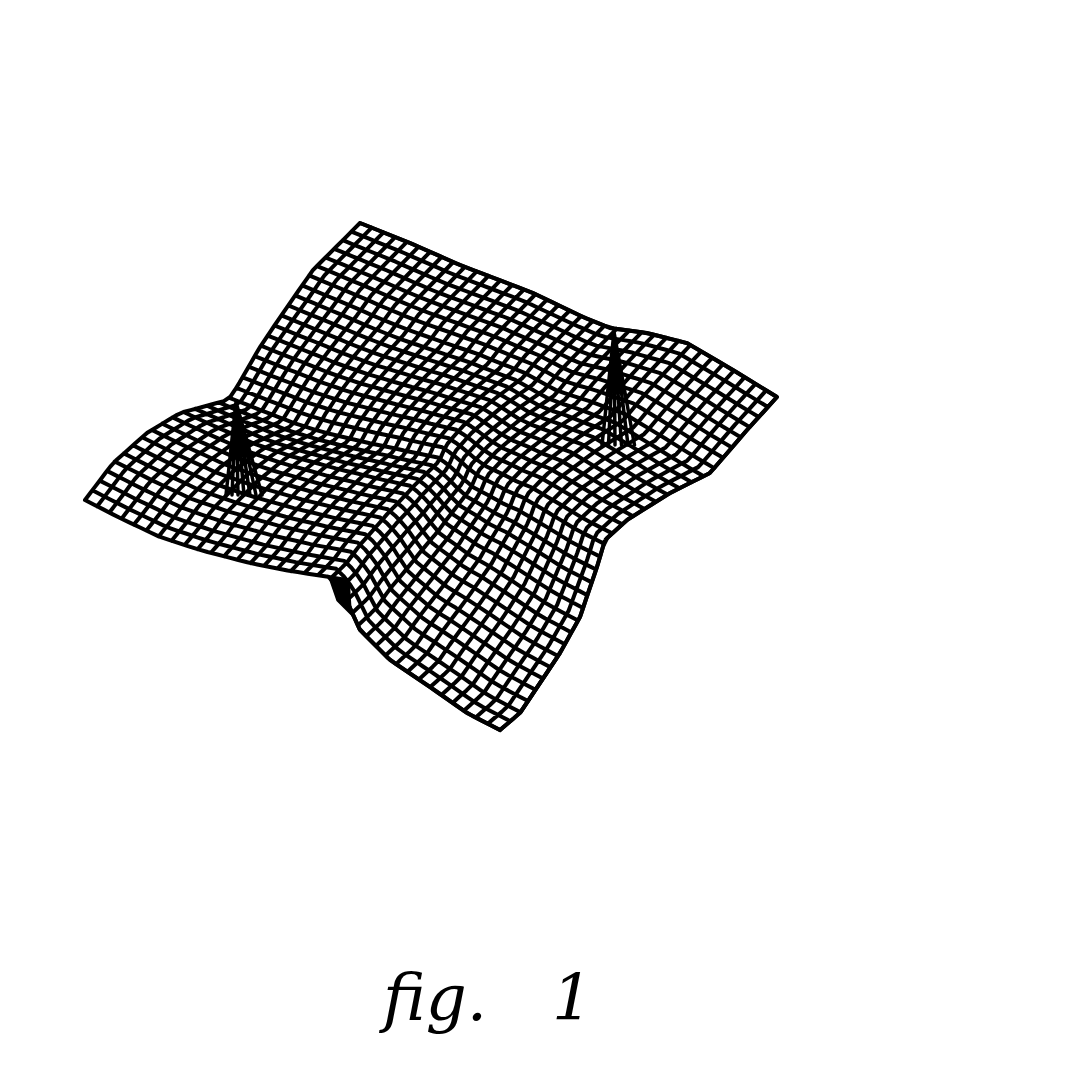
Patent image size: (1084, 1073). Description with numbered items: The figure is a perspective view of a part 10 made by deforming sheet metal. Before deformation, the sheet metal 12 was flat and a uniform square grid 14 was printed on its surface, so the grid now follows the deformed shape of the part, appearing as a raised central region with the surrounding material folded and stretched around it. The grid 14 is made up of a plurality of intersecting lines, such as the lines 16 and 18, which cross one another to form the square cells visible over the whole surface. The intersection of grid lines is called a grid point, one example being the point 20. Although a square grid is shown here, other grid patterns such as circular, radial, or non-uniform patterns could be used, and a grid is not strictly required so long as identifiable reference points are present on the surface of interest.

The part 10 is at (680, 137).
The sheet metal 12 is at (745, 435).
The square grid 14 is at (757, 300).
The grid line 16 is at (407, 675).
The grid line 18 is at (480, 725).
The grid point 20 is at (560, 650).